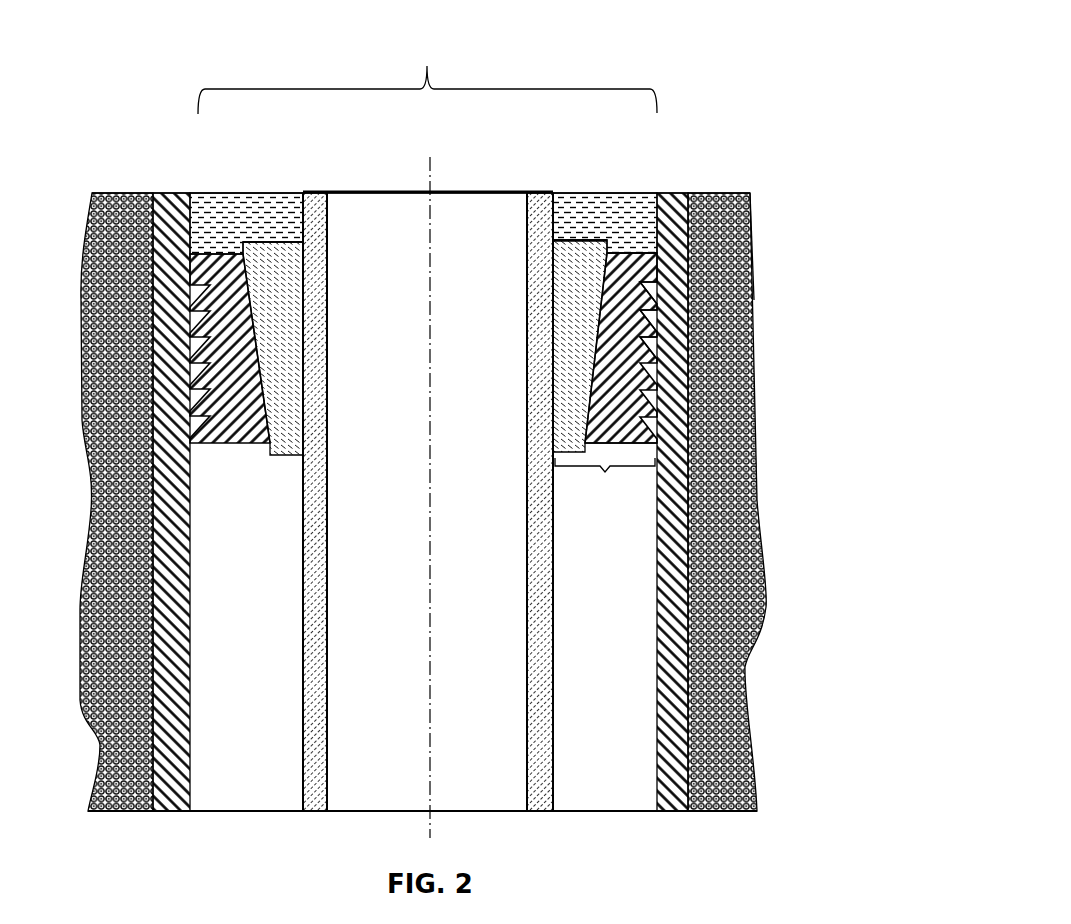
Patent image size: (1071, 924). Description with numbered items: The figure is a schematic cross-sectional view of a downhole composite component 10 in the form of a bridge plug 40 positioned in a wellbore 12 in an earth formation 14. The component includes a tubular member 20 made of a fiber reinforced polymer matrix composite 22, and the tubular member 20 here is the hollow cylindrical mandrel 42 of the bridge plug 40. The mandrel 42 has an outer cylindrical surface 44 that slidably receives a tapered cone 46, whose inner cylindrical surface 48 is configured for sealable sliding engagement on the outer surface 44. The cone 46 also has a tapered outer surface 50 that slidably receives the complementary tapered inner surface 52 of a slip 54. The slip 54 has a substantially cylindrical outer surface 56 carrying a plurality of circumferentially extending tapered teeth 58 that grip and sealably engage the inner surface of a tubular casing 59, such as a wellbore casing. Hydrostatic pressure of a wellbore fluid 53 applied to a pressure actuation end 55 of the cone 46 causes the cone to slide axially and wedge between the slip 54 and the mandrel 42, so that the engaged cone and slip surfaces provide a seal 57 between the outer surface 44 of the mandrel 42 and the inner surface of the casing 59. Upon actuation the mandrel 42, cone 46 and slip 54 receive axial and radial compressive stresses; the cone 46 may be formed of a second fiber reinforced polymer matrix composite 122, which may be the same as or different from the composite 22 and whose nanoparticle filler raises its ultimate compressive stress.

The downhole composite component 10 is at (700, 82).
The wellbore 12 is at (687, 603).
The earth formation 14 is at (578, 382).
The tubular member 20 is at (427, 75).
The fiber reinforced polymer matrix composite 22 is at (556, 234).
The bridge plug 40 is at (544, 188).
The hollow cylindrical mandrel 42 is at (554, 190).
The outer cylindrical surface 44 is at (603, 192).
The tapered cone 46 is at (594, 398).
The inner cylindrical surface 48 is at (552, 328).
The tapered outer surface 50 is at (747, 212).
The tapered inner surface 52 is at (600, 298).
The wellbore fluid 53 is at (238, 192).
The slip 54 is at (653, 322).
The pressure actuation end 55 is at (262, 240).
The substantially cylindrical outer surface 56 is at (609, 247).
The seal 57 is at (606, 472).
The tapered teeth 58 is at (644, 268).
The tubular casing 59 is at (177, 190).
The second fiber reinforced polymer matrix composite 122 is at (283, 290).